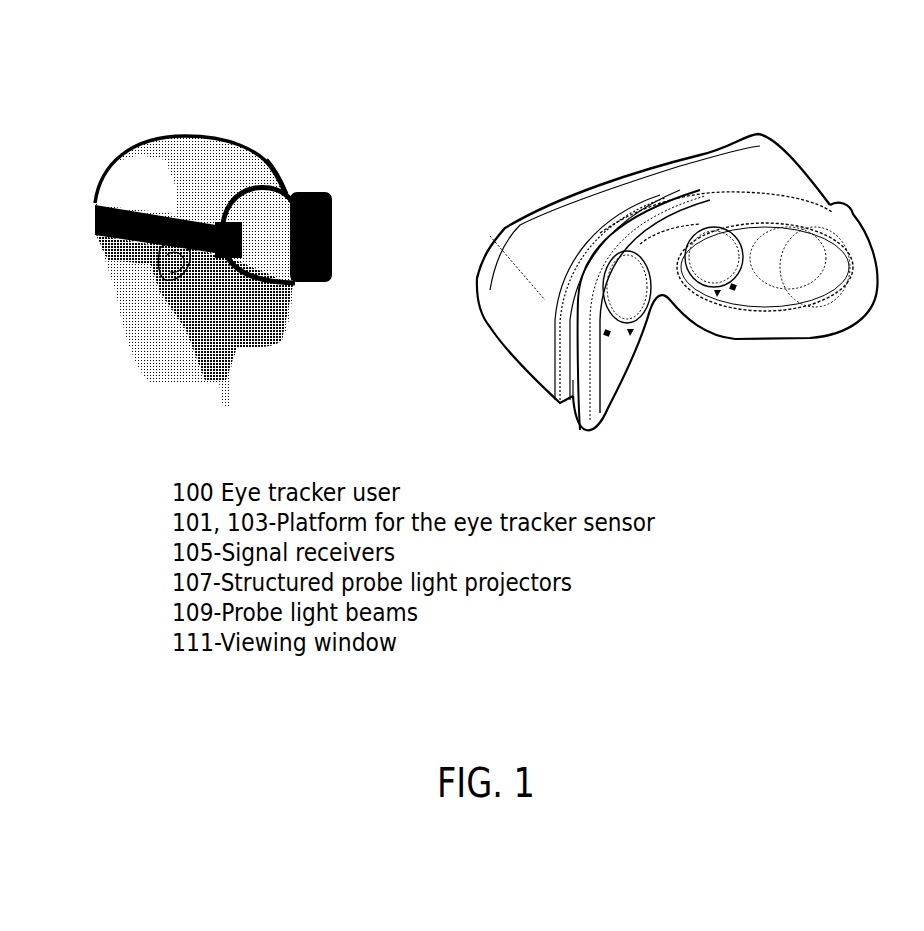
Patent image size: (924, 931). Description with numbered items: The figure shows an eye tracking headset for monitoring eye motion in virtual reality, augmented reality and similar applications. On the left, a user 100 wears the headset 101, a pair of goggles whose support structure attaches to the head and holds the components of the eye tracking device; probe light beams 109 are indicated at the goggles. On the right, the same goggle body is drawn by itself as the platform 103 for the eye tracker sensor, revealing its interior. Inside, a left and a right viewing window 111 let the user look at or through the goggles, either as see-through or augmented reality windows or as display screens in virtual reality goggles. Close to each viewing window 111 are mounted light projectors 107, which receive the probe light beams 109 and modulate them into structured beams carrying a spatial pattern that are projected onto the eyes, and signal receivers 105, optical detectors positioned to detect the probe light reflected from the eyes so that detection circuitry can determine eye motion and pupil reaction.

The user 100 is at (178, 190).
The headset 101 is at (303, 190).
The platform for the eye tracker sensor 103 is at (760, 165).
The signal receivers 105 is at (610, 340).
The light projectors 107 is at (630, 332).
The probe light beams 109 is at (273, 250).
The viewing windows 111 is at (713, 258).